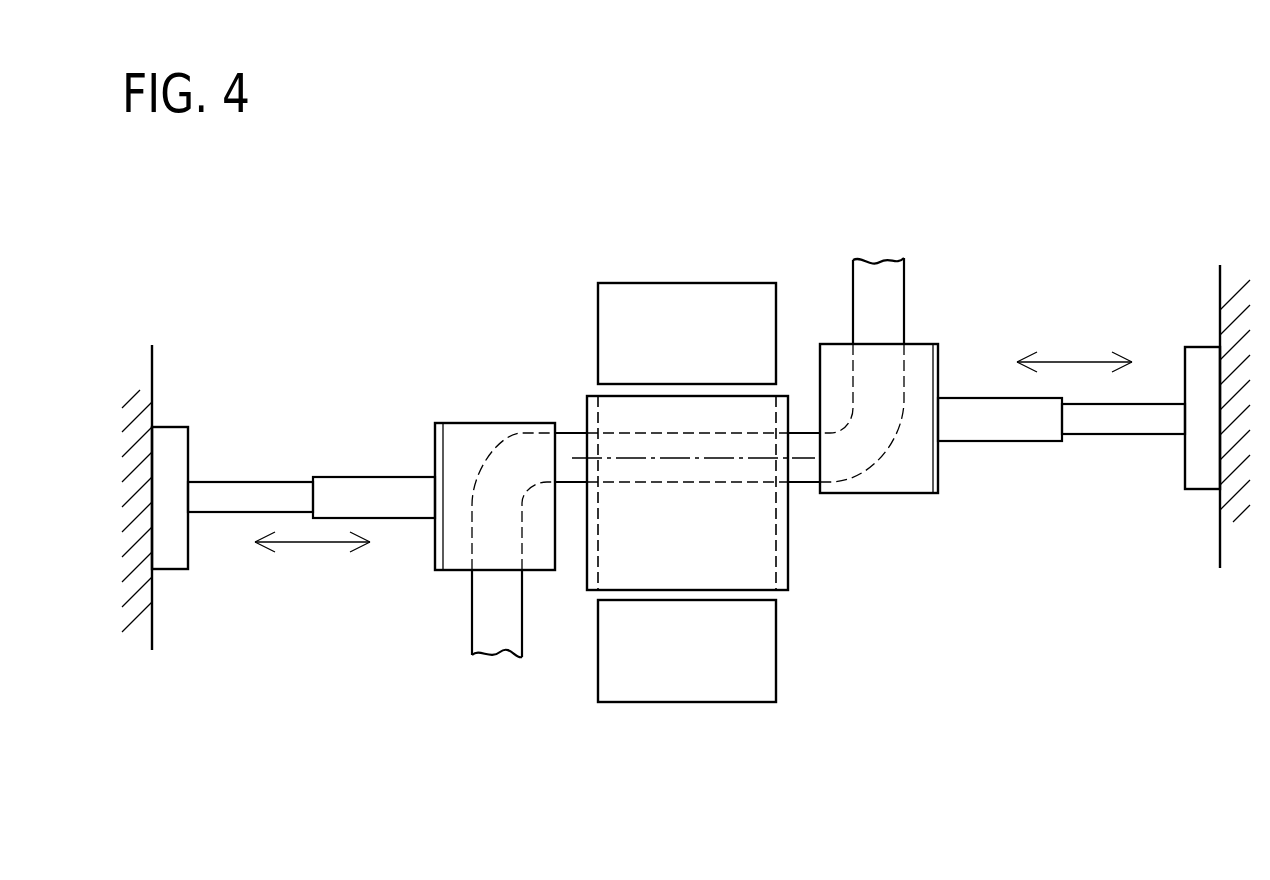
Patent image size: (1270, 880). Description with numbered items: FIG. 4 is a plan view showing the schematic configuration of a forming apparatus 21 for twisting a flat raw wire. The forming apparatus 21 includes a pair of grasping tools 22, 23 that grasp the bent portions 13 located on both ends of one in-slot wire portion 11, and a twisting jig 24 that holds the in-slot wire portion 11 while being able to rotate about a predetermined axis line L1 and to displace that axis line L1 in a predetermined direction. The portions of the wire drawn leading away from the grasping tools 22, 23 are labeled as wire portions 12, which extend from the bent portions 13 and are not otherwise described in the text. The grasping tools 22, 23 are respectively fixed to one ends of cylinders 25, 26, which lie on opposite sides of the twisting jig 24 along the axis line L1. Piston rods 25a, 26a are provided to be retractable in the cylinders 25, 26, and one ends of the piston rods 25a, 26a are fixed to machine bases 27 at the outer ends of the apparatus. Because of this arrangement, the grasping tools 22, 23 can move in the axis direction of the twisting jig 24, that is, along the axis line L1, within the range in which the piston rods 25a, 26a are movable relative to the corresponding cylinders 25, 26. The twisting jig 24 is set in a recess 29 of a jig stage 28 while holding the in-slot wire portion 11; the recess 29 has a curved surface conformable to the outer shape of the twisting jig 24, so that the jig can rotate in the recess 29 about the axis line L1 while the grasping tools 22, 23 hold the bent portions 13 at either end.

The in-slot wire portion 11 is at (712, 483).
The pipe 12 is at (473, 617).
The bent portion 13 is at (500, 450).
The forming apparatus 21 is at (815, 225).
The grasping tool 22 is at (913, 342).
The grasping tool 23 is at (518, 423).
The twisting jig 24 is at (788, 557).
The cylinder 25 is at (1000, 442).
The piston rod 25a is at (1102, 425).
The cylinder 26 is at (342, 481).
The piston rod 26a is at (252, 487).
The machine base 27 is at (150, 612).
The jig stage 28 is at (766, 635).
The recess 29 is at (638, 386).
The axis line L1 is at (578, 457).